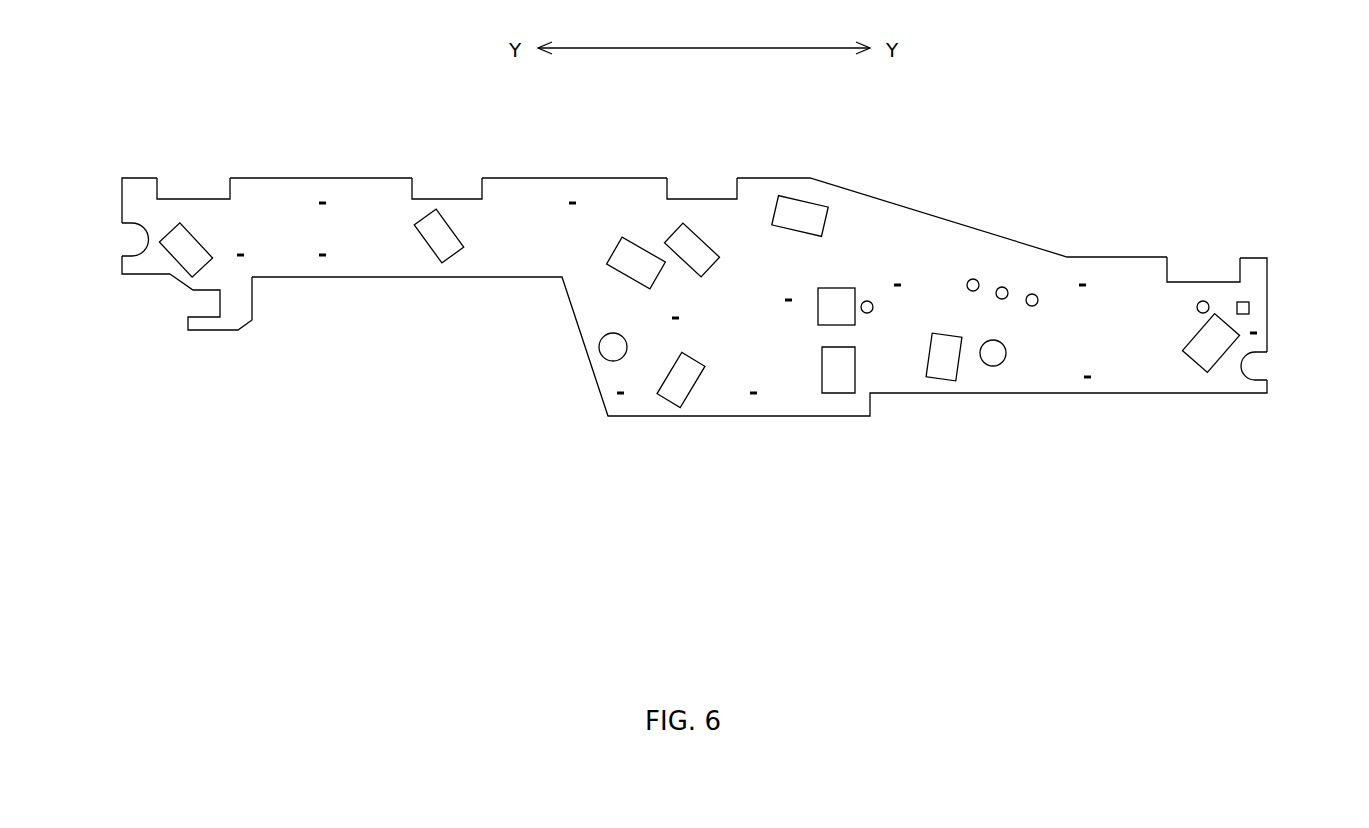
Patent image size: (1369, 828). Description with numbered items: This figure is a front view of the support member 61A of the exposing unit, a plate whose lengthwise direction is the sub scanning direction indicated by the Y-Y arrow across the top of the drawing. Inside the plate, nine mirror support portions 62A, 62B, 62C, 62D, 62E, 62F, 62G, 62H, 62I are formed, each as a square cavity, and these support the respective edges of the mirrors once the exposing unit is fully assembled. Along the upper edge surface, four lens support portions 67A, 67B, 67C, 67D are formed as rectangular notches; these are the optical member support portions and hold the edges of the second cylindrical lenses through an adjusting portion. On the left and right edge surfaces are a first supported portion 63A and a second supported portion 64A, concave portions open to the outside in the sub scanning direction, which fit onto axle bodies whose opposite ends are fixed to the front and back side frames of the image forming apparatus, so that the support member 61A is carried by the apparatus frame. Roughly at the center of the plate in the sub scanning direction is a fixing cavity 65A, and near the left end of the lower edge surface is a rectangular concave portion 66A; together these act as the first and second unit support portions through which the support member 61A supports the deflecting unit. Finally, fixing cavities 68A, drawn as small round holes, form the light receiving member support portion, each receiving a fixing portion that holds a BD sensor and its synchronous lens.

The support member 61A is at (960, 228).
The mirror support portion 62A is at (1220, 325).
The mirror support portion 62B is at (945, 372).
The mirror support portion 62C is at (808, 210).
The mirror support portion 62D is at (688, 230).
The mirror support portion 62E is at (833, 382).
The mirror support portion 62F is at (432, 210).
The mirror support portion 62G is at (678, 381).
The mirror support portion 62H is at (630, 245).
The mirror support portion 62I is at (180, 224).
The first supported portion 63A is at (130, 240).
The second supported portion 64A is at (1260, 366).
The fixing cavity 65A is at (608, 348).
The rectangular concave portion 66A is at (205, 302).
The lens support portion 67A is at (1193, 272).
The lens support portion 67B is at (717, 192).
The lens support portion 67C is at (460, 191).
The lens support portion 67D is at (203, 186).
The fixing cavities 68A is at (975, 292).